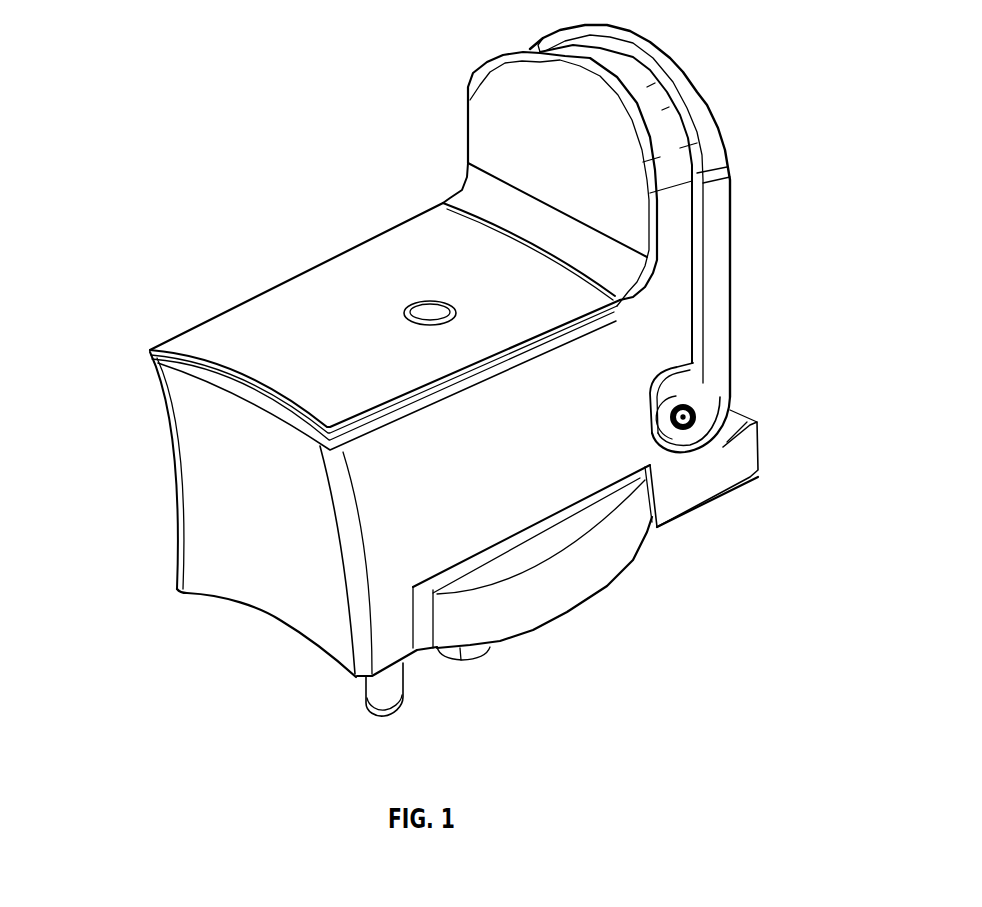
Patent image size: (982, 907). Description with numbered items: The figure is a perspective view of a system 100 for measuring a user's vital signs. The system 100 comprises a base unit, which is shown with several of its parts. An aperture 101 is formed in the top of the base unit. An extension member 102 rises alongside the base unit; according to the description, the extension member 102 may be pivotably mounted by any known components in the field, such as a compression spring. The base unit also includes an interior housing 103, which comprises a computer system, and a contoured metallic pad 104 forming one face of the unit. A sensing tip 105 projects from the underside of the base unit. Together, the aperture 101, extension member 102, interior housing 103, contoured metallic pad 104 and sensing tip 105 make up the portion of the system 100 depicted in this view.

The system 100 is at (280, 315).
The aperture 101 is at (430, 307).
The extension member 102 is at (707, 192).
The interior housing 103 is at (613, 567).
The contoured metallic pad 104 is at (222, 513).
The sensing tip 105 is at (372, 695).